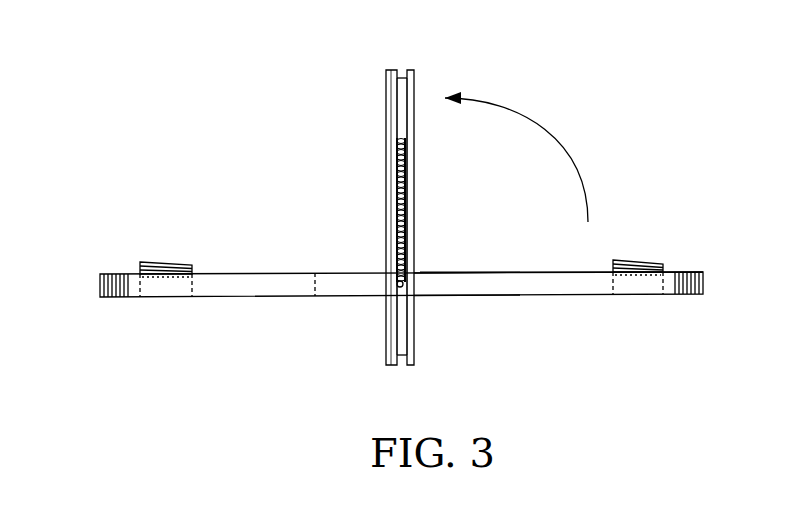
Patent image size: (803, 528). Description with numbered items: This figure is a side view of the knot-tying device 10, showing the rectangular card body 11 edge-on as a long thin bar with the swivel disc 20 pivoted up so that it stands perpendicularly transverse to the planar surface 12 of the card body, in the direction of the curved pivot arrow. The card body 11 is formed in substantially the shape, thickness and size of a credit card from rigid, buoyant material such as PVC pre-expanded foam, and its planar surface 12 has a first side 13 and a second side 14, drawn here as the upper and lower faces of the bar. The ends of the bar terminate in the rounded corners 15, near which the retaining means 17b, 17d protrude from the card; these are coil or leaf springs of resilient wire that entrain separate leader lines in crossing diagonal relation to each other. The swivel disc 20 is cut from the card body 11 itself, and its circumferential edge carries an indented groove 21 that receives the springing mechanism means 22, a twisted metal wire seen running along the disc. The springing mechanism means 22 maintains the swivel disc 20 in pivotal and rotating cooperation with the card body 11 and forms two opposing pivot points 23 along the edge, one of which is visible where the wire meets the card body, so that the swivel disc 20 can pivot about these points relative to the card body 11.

The knot-tying device 10 is at (266, 206).
The rectangular card body 11 is at (685, 272).
The planar surface 12 is at (517, 272).
The first side 13 is at (437, 272).
The second side 14 is at (440, 295).
The rounded corners 15 is at (102, 285).
The retaining means 17b is at (150, 262).
The retaining means 17d is at (615, 262).
The swivel disc 20 is at (414, 153).
The indented groove 21 is at (400, 73).
The springing mechanism means 22 is at (400, 163).
The pivot points 23 is at (400, 287).